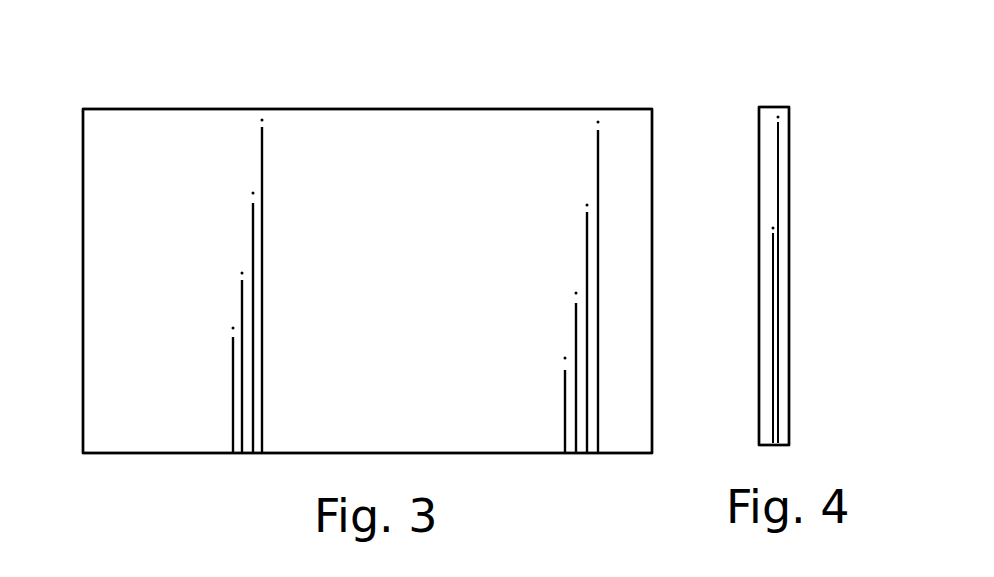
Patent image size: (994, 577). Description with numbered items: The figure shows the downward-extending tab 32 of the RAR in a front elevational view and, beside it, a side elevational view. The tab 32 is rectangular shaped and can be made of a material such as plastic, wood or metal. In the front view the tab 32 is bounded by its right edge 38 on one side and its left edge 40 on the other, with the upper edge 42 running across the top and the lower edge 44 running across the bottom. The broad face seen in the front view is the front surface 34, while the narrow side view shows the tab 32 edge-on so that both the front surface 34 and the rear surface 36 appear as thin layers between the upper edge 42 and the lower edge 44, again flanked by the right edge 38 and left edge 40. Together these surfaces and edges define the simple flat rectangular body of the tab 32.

In FIG. 3, the tab 32 is at (367, 281).
In FIG. 4, the tab 32 is at (759, 184).
In FIG. 3, the front surface 34 is at (447, 142).
In FIG. 3, the rear surface 36 is at (182, 178).
In FIG. 4, the rear surface 36 is at (789, 196).
In FIG. 3, the right edge 38 is at (652, 257).
In FIG. 4, the right edge 38 is at (779, 283).
In FIG. 3, the left edge 40 is at (83, 256).
In FIG. 4, the left edge 40 is at (775, 307).
In FIG. 3, the upper edge 42 is at (398, 108).
In FIG. 4, the upper edge 42 is at (770, 107).
In FIG. 3, the lower edge 44 is at (100, 455).
In FIG. 4, the lower edge 44 is at (773, 447).